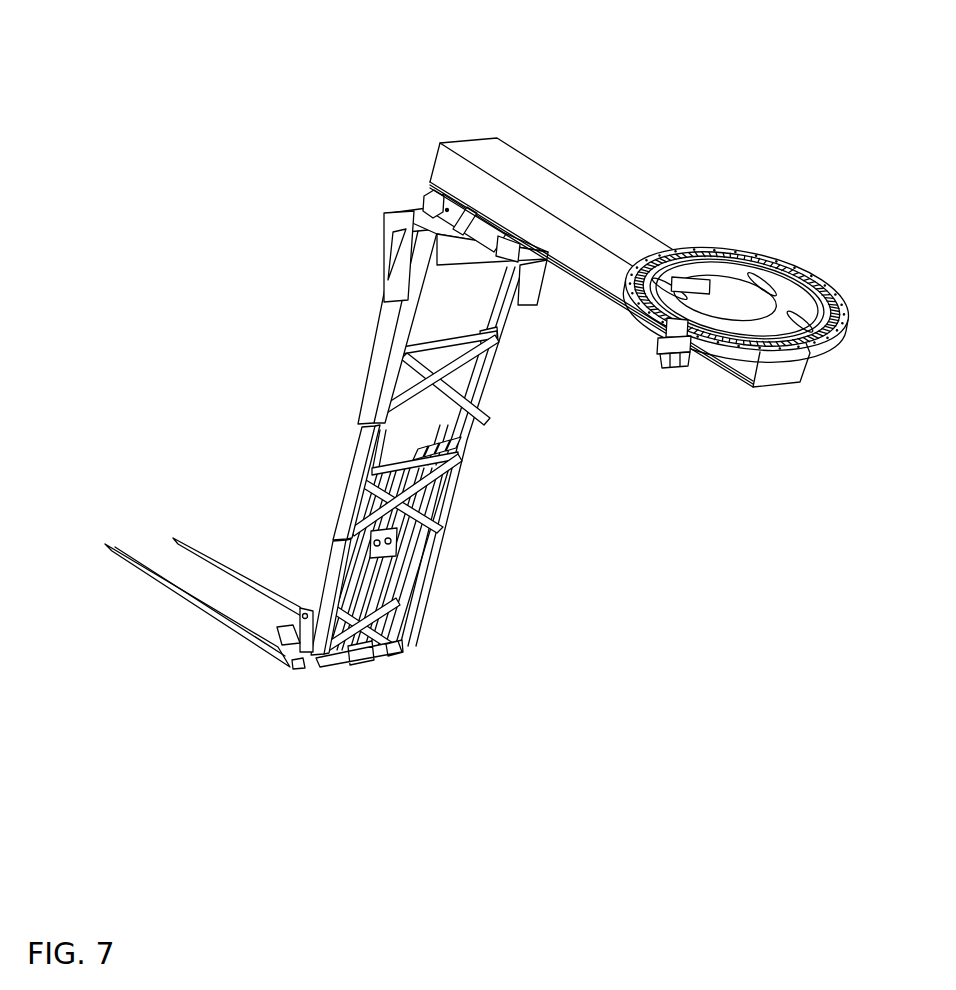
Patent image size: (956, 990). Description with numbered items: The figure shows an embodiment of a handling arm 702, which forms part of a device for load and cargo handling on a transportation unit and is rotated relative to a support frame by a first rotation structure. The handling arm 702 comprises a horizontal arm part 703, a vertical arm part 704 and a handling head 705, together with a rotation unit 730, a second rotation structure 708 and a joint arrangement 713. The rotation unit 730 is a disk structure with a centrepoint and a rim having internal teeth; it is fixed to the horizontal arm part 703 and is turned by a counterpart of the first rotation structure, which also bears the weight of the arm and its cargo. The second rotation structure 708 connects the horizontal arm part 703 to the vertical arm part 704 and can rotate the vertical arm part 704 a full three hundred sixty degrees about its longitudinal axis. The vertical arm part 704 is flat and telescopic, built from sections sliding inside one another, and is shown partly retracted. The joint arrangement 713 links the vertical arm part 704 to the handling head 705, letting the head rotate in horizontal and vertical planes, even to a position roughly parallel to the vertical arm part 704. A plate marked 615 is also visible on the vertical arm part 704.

The handling arm 702 is at (158, 80).
The horizontal arm part 703 is at (618, 297).
The vertical arm part 704 is at (429, 436).
The handling head 705 is at (200, 545).
The second rotation structure 708 is at (428, 193).
The joint arrangement 713 is at (325, 665).
The rotation unit 730 is at (748, 262).
The mounting plate 615 is at (382, 550).